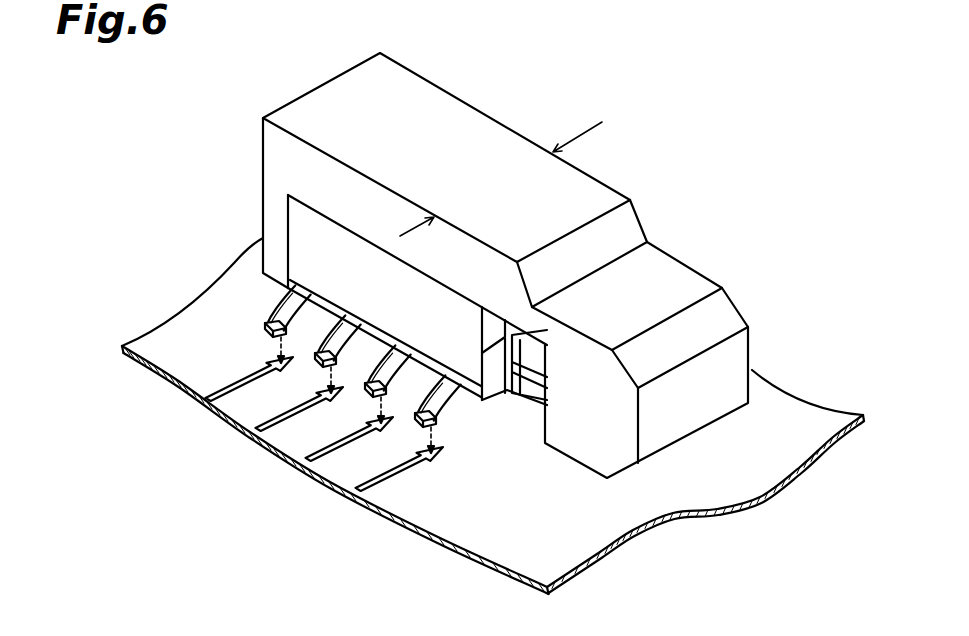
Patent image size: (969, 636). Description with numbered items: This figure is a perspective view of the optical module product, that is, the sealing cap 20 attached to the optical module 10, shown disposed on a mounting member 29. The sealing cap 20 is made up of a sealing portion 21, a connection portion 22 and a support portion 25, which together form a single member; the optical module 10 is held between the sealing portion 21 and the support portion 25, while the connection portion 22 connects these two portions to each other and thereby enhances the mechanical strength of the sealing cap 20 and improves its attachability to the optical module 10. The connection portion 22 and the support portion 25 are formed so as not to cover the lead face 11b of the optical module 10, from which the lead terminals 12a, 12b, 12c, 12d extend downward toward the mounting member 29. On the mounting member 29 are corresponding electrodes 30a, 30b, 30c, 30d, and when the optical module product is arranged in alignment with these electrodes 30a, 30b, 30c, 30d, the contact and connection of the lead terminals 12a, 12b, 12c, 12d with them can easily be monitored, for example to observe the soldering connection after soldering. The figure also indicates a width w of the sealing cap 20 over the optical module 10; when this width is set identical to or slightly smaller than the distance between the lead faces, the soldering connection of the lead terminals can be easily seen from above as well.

The optical module 10 is at (493, 416).
The lead face 11b is at (276, 257).
The lead terminal 12a is at (264, 333).
The lead terminal 12b is at (314, 362).
The lead terminal 12c is at (364, 392).
The lead terminal 12d is at (414, 422).
The sealing cap 20 is at (629, 174).
The sealing portion 21 is at (704, 274).
The connection portion 22 is at (432, 98).
The support portion 25 is at (262, 231).
The mounting member 29 is at (672, 510).
The electrode 30a is at (245, 373).
The electrode 30b is at (296, 404).
The electrode 30c is at (346, 434).
The electrode 30d is at (398, 466).